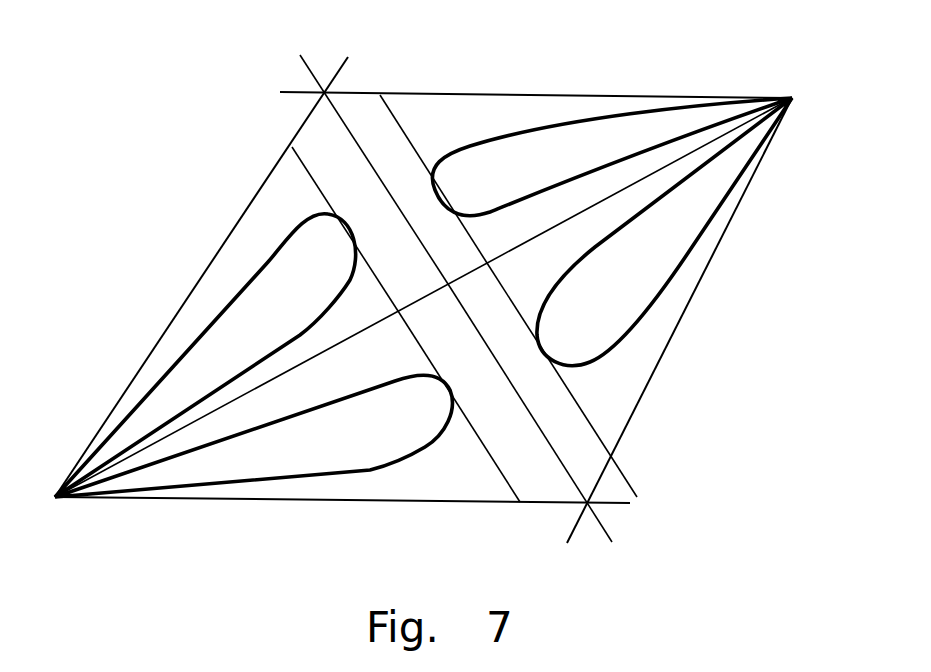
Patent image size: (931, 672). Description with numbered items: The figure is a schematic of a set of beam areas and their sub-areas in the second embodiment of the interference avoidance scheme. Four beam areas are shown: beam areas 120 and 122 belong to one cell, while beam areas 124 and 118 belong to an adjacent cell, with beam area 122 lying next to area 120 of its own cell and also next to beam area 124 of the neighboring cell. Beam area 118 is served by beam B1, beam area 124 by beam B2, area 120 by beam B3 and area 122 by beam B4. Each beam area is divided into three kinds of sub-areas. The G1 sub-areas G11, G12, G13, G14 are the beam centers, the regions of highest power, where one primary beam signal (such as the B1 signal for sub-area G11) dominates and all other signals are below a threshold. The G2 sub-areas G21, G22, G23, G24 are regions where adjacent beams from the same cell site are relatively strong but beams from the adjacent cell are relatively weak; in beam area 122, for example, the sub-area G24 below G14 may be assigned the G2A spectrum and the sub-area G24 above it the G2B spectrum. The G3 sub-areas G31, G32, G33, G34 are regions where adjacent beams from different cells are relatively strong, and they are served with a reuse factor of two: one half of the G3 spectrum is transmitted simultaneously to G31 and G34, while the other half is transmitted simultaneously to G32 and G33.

The beam area 118 is at (342, 517).
The beam area 120 is at (695, 320).
The beam area 122 is at (536, 73).
The beam area 124 is at (185, 277).
The beam B1 is at (372, 529).
The beam B2 is at (236, 191).
The beam B3 is at (677, 402).
The beam B4 is at (525, 108).
The G1 sub-area G11 is at (284, 465).
The G1 sub-area G12 is at (204, 346).
The G1 sub-area G13 is at (671, 285).
The G1 sub-area G14 is at (612, 113).
The G2 sub-area G21 is at (443, 465).
The G2 sub-area G22 is at (337, 328).
The G2 sub-area G23 is at (537, 267).
The G2 sub-area G24 is at (527, 227).
The G3 sub-area G31 is at (510, 437).
The G3 sub-area G32 is at (335, 163).
The G3 sub-area G33 is at (560, 423).
The G3 sub-area G34 is at (387, 134).